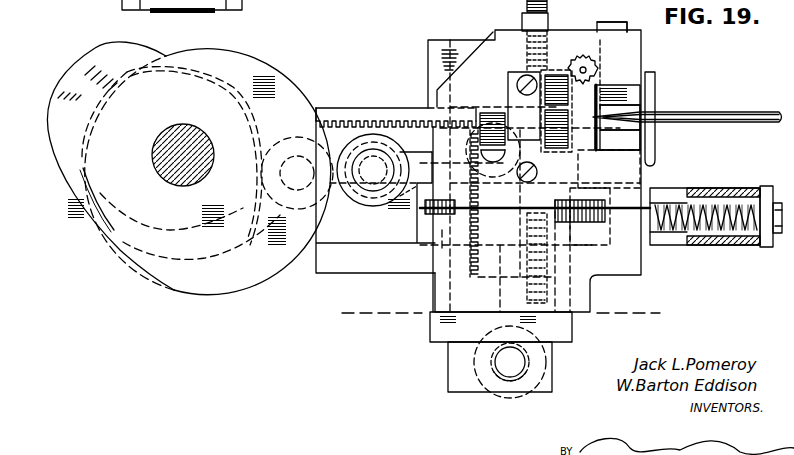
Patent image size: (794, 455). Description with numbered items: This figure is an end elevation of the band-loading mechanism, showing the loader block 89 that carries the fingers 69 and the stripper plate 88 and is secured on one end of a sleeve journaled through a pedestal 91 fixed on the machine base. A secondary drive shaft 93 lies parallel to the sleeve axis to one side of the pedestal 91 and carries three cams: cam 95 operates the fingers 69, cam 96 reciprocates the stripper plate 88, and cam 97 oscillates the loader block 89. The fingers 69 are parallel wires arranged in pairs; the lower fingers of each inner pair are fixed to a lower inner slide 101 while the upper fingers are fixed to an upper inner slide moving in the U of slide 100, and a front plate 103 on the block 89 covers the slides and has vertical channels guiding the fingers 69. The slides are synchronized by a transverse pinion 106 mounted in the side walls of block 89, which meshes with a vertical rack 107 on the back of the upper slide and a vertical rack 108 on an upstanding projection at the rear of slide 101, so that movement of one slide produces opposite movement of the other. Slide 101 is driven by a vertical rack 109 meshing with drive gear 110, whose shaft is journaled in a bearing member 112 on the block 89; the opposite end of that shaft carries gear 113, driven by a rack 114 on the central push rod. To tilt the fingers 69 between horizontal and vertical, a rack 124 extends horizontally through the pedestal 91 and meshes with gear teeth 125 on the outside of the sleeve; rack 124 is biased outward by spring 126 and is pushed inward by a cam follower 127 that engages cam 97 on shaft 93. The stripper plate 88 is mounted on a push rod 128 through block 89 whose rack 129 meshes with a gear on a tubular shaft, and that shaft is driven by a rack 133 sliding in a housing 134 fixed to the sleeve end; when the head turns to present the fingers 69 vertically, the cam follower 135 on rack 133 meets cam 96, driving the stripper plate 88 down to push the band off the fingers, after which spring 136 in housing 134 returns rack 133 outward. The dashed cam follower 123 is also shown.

The fingers 69 is at (719, 112).
The stripper plate 88 is at (657, 84).
The loader block 89 is at (487, 51).
The pedestal 91 is at (634, 272).
The secondary drive shaft 93 is at (152, 146).
The cam 95 is at (89, 206).
The cam 96 is at (93, 50).
The cam 97 is at (253, 284).
The slide 100 is at (620, 90).
The lower inner slide 101 is at (622, 143).
The front plate 103 is at (642, 98).
The transverse pinion 106 is at (614, 75).
The vertical rack 107 is at (573, 33).
The vertical rack 108 is at (600, 92).
The vertical rack 109 is at (583, 62).
The drive gear 110 is at (573, 142).
The bearing member 112 is at (518, 76).
The gear 113 is at (490, 118).
The rack 114 is at (488, 152).
The cam follower 123 is at (297, 138).
The rack 124 is at (497, 200).
The gear teeth 125 is at (418, 200).
The spring 126 is at (716, 200).
The cam follower 127 is at (366, 205).
The push rod 128 is at (380, 106).
The rack 129 is at (393, 128).
The rack 133 is at (447, 360).
The housing 134 is at (430, 328).
The cam follower 135 is at (505, 395).
The spring 136 is at (553, 258).